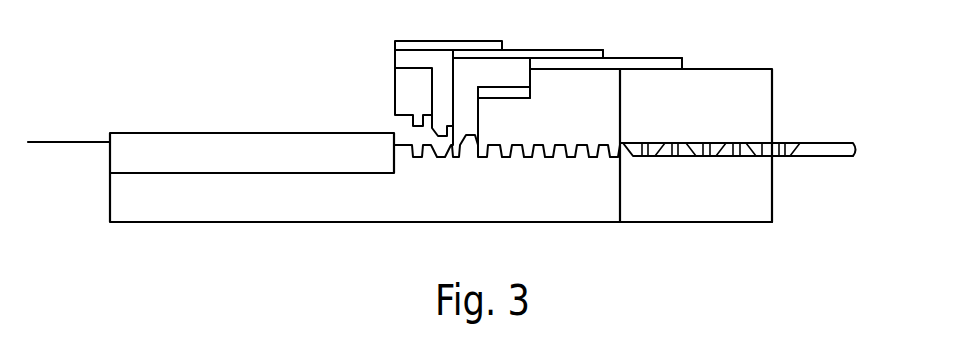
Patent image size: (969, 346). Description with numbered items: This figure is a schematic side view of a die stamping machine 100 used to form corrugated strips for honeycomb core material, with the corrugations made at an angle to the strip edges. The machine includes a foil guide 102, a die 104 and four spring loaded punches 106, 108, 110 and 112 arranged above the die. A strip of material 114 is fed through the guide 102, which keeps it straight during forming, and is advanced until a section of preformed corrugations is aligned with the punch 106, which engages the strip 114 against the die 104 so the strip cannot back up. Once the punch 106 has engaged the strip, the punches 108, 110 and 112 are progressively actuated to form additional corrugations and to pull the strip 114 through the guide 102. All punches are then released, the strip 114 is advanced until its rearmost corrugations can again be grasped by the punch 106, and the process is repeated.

The die stamping machine 100 is at (301, 72).
The foil guide 102 is at (224, 142).
The die 104 is at (168, 207).
The spring loaded punch 106 is at (590, 103).
The spring loaded punch 108 is at (523, 66).
The spring loaded punch 110 is at (445, 58).
The spring loaded punch 112 is at (395, 80).
The strip of material 114 is at (62, 141).